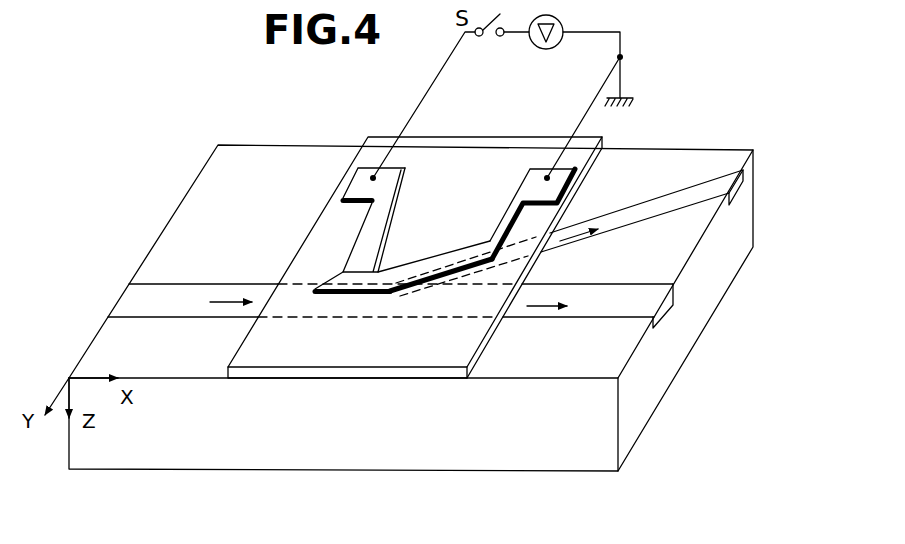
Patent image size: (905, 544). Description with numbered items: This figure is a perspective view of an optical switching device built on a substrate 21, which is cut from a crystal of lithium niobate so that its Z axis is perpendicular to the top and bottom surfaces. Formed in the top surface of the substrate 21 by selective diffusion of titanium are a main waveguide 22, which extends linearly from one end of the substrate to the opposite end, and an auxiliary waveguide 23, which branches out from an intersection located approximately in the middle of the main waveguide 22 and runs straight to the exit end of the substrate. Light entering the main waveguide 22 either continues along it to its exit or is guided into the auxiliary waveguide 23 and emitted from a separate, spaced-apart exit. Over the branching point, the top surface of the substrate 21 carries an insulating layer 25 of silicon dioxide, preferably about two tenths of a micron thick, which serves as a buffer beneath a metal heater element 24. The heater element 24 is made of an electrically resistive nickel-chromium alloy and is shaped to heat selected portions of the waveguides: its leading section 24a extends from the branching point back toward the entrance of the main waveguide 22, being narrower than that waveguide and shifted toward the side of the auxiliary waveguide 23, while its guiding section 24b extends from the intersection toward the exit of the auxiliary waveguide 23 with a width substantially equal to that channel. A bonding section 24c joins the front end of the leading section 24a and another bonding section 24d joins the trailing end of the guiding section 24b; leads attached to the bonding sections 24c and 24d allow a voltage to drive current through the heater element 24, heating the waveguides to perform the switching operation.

The substrate 21 is at (652, 141).
The main waveguide 22 is at (199, 292).
The auxiliary waveguide 23 is at (627, 219).
The heater element 24 is at (445, 260).
The leading section 24a is at (363, 300).
The guiding section 24b is at (449, 254).
The bonding section 24c is at (396, 190).
The bonding section 24d is at (530, 186).
The insulating layer 25 is at (480, 137).